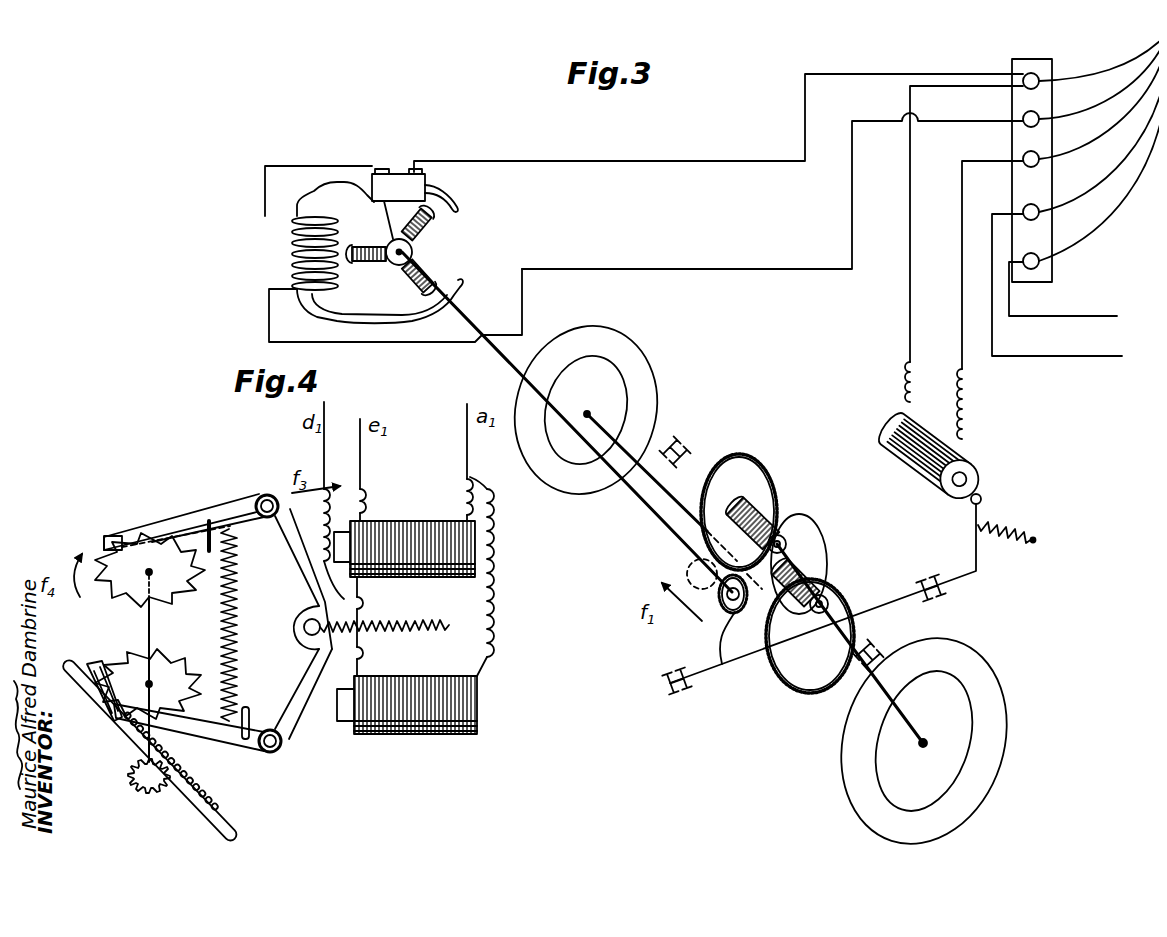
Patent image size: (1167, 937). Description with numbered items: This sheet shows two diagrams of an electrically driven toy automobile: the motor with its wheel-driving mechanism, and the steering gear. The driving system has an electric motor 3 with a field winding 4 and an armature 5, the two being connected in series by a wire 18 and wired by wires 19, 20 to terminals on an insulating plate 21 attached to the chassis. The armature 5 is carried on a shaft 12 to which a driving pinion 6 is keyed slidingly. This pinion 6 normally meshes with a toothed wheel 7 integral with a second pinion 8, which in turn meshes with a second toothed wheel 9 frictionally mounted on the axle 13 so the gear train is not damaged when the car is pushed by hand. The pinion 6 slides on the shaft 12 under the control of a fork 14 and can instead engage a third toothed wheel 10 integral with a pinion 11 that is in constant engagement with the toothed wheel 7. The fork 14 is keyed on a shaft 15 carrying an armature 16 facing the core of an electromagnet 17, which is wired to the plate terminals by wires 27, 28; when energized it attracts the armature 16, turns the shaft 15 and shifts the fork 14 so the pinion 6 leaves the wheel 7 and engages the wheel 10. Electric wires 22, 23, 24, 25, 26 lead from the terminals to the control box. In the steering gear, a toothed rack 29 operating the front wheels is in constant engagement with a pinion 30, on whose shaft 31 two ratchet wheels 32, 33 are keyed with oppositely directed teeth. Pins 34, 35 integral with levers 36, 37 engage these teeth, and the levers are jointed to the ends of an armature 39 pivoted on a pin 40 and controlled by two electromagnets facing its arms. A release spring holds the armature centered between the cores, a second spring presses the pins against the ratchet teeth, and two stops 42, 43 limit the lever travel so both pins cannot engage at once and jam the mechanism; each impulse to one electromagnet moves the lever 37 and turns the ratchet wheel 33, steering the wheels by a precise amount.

In FIG. 3, the electric motor 3 is at (337, 190).
In FIG. 3, the field winding 4 is at (292, 241).
In FIG. 3, the armature 5 is at (428, 235).
In FIG. 3, the driving pinion 6 is at (688, 572).
In FIG. 3, the toothed wheel 7 is at (796, 525).
In FIG. 3, the second pinion 8 is at (822, 576).
In FIG. 3, the second toothed wheel 9 is at (838, 601).
In FIG. 3, the third toothed wheel 10 is at (745, 460).
In FIG. 3, the pinion 11 is at (759, 510).
In FIG. 3, the shaft 12 is at (465, 318).
In FIG. 3, the axle 13 is at (850, 682).
In FIG. 3, the fork 14 is at (718, 650).
In FIG. 3, the shaft 15 is at (730, 667).
In FIG. 3, the armature 16 is at (979, 531).
In FIG. 3, the electromagnet 17 is at (925, 474).
In FIG. 3, the wire 18 is at (285, 166).
In FIG. 3, the wire 19 is at (501, 160).
In FIG. 3, the wire 20 is at (752, 270).
In FIG. 3, the insulating plate 21 is at (1046, 271).
In FIG. 3, the electric wire 22 is at (1099, 61).
In FIG. 3, the electric wire 23 is at (1099, 80).
In FIG. 3, the electric wire 24 is at (1099, 101).
In FIG. 3, the electric wire 25 is at (1099, 130).
In FIG. 3, the electric wire 26 is at (1099, 158).
In FIG. 3, the wire 27 is at (908, 300).
In FIG. 3, the wire 28 is at (960, 320).
In FIG. 4, the toothed rack 29 is at (188, 812).
In FIG. 4, the pinion 30 is at (152, 795).
In FIG. 4, the shaft 31 is at (152, 630).
In FIG. 4, the ratchet wheel 32 is at (128, 679).
In FIG. 4, the ratchet wheel 33 is at (150, 579).
In FIG. 4, the pin 34 is at (120, 724).
In FIG. 4, the pin 35 is at (117, 537).
In FIG. 4, the lever 36 is at (216, 738).
In FIG. 4, the lever 37 is at (184, 520).
In FIG. 4, the armature 39 is at (267, 506).
In FIG. 4, the pin 40 is at (303, 632).
In FIG. 4, the stop 42 is at (250, 712).
In FIG. 4, the stop 43 is at (213, 523).